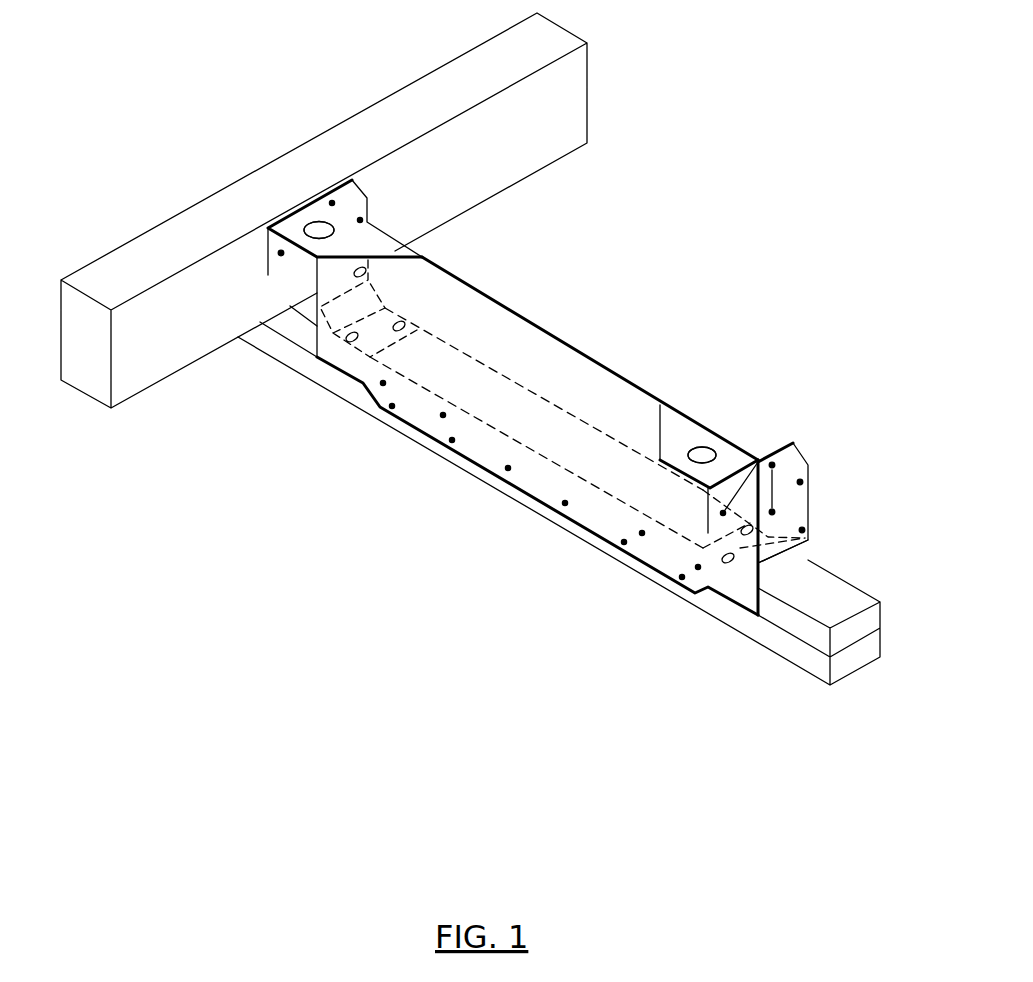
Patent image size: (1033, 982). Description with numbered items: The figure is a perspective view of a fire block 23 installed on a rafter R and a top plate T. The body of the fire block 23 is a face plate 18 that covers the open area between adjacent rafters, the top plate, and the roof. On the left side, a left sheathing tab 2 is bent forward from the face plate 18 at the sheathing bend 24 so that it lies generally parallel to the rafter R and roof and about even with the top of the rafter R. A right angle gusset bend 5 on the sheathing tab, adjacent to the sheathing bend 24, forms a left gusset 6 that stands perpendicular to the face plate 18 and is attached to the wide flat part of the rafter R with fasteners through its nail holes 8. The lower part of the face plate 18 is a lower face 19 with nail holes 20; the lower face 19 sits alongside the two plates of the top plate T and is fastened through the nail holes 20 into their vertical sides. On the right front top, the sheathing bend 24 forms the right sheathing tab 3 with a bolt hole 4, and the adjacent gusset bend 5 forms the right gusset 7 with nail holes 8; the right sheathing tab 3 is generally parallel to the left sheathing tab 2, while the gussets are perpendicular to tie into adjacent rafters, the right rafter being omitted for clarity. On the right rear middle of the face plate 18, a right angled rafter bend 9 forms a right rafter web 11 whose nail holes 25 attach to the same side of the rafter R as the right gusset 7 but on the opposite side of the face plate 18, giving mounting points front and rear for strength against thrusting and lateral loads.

The rafter R is at (483, 78).
The top plate T is at (877, 648).
The left sheathing tab 2 is at (286, 216).
The right sheathing tab 3 is at (664, 413).
The bolt hole 4 is at (318, 232).
The sheathing bend 24 is at (340, 222).
The gusset bend 5 is at (758, 462).
The left gusset 6 is at (298, 255).
The right gusset 7 is at (740, 485).
The nail holes 8 is at (281, 254).
The rafter bend 9 is at (760, 565).
The right rafter web 11 is at (798, 503).
The face plate 18 is at (483, 337).
The lower face 19 is at (490, 458).
The nail holes 20 is at (625, 547).
The fire block 23 is at (542, 377).
The nail holes 25 is at (802, 530).